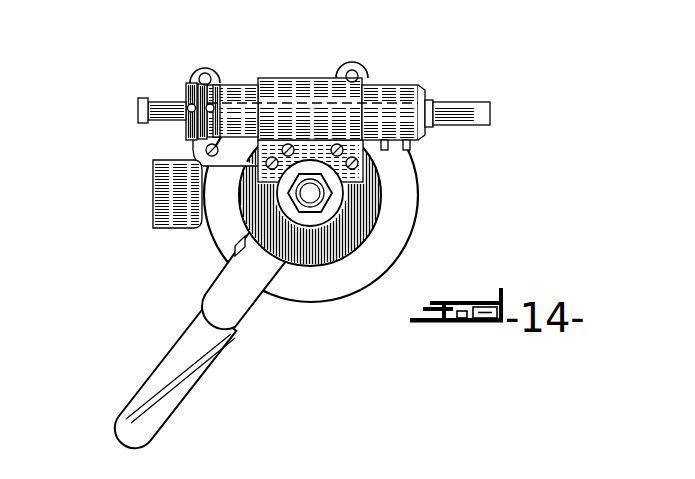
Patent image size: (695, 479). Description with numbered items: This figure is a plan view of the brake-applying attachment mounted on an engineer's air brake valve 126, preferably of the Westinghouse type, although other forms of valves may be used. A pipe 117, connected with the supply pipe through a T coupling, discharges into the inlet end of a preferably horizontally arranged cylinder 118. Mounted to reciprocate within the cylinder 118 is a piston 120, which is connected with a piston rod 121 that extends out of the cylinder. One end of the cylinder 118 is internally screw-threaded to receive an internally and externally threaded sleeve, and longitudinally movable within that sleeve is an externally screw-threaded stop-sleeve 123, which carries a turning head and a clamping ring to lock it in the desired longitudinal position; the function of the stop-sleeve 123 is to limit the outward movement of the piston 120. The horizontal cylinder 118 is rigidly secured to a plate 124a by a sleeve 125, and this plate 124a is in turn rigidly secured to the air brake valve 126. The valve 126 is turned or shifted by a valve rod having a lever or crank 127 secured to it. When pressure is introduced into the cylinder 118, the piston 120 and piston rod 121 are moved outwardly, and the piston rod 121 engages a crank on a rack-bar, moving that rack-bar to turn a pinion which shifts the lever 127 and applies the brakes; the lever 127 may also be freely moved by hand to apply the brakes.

The pipe 117 is at (458, 103).
The cylinder 118 is at (393, 84).
The piston 120 is at (414, 240).
The piston rod 121 is at (163, 122).
The stop-sleeve 123 is at (138, 105).
The plate 124a is at (380, 190).
The sleeve 125 is at (288, 78).
The engineer's air brake valve 126 is at (315, 196).
The lever 127 is at (246, 294).